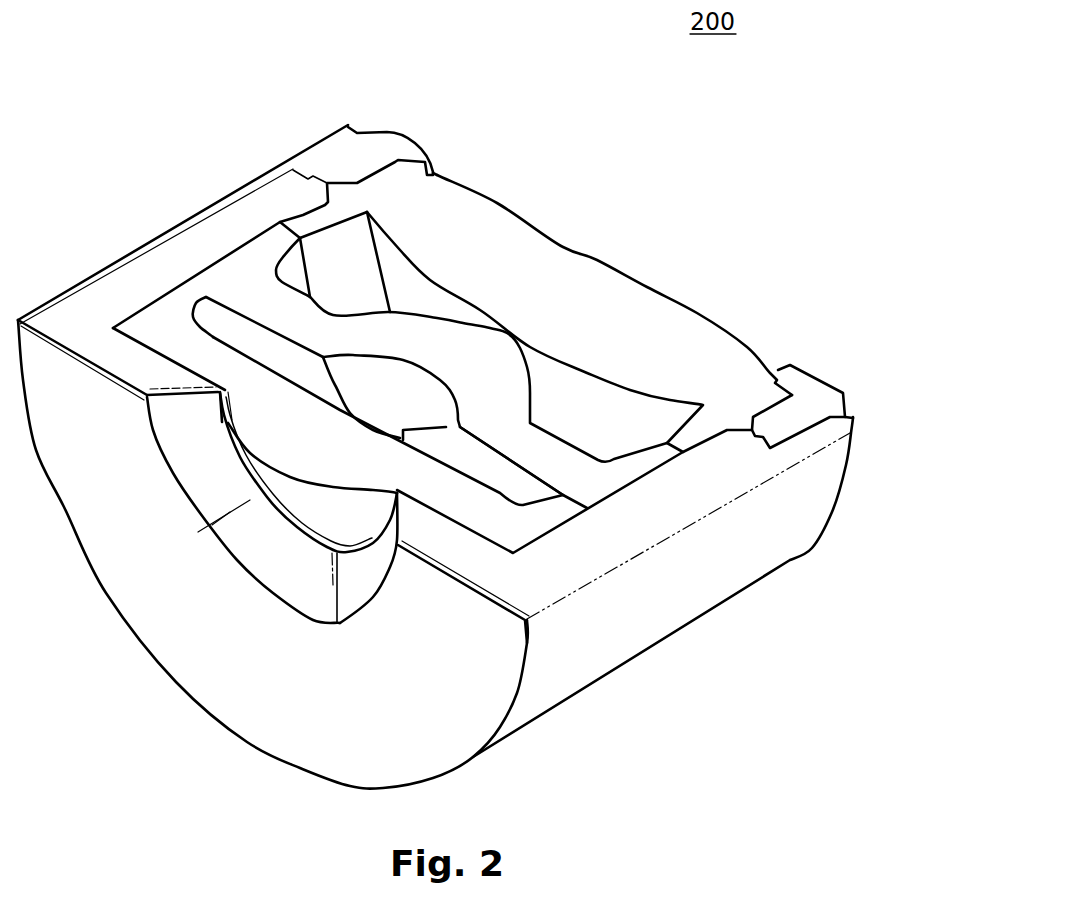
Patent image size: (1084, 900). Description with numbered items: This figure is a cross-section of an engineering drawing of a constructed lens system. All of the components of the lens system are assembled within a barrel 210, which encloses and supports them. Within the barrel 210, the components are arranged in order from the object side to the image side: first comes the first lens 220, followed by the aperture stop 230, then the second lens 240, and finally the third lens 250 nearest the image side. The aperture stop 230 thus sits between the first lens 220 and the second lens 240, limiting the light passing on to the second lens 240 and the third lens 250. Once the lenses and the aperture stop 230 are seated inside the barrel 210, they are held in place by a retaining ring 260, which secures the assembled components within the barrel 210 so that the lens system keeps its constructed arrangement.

The barrel 210 is at (133, 282).
The first lens 220 is at (527, 490).
The aperture stop 230 is at (513, 528).
The second lens 240 is at (587, 480).
The third lens 250 is at (670, 337).
The retaining ring 260 is at (802, 408).